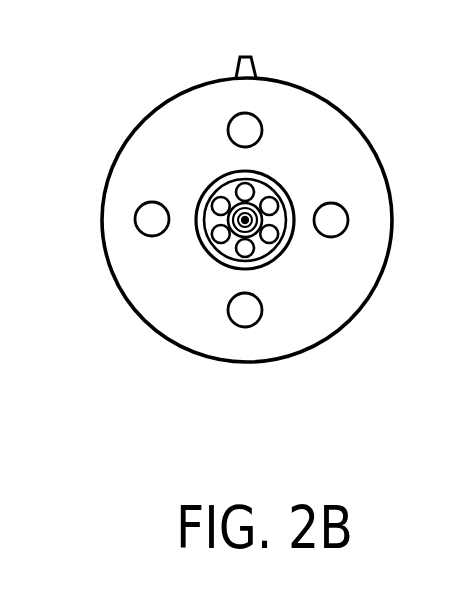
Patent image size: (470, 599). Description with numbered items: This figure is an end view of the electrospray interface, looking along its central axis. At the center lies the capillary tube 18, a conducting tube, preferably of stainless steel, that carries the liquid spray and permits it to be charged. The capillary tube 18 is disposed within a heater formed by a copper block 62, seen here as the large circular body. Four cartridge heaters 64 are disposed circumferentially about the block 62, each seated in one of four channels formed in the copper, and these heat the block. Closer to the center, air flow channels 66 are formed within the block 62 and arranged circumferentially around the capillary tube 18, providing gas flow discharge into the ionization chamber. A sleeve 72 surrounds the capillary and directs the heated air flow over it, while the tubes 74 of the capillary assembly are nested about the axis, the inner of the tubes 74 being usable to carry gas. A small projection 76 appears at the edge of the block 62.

The capillary tube 18 is at (237, 230).
The copper block 62 is at (360, 130).
The cartridge heaters 64 is at (348, 223).
The air flow channels 66 is at (213, 197).
The sleeve 72 is at (287, 245).
The tubes 74 is at (233, 217).
The tab 76 is at (252, 69).